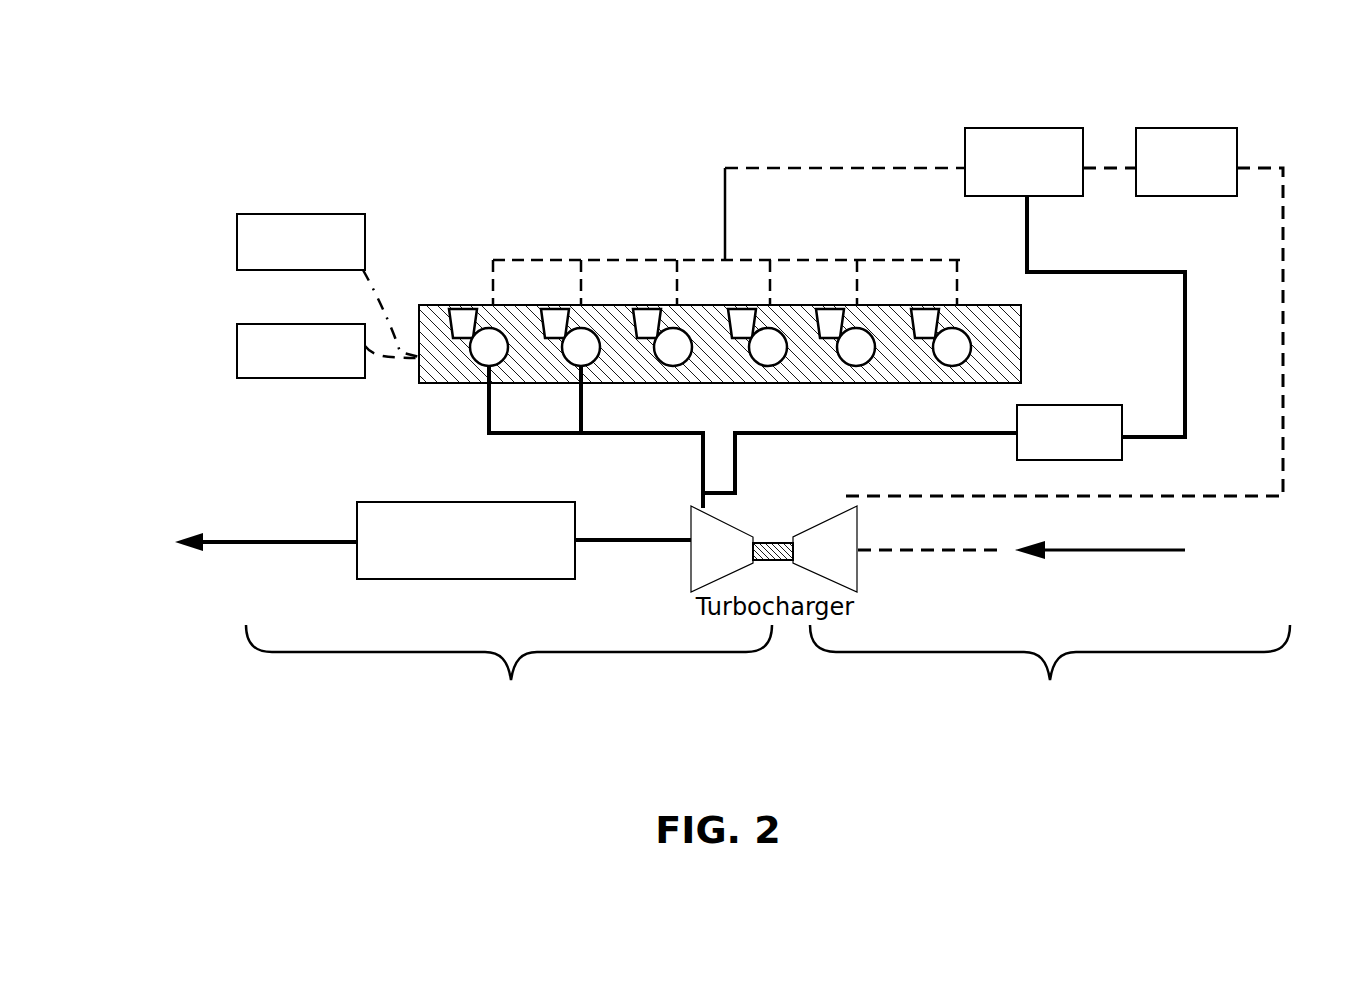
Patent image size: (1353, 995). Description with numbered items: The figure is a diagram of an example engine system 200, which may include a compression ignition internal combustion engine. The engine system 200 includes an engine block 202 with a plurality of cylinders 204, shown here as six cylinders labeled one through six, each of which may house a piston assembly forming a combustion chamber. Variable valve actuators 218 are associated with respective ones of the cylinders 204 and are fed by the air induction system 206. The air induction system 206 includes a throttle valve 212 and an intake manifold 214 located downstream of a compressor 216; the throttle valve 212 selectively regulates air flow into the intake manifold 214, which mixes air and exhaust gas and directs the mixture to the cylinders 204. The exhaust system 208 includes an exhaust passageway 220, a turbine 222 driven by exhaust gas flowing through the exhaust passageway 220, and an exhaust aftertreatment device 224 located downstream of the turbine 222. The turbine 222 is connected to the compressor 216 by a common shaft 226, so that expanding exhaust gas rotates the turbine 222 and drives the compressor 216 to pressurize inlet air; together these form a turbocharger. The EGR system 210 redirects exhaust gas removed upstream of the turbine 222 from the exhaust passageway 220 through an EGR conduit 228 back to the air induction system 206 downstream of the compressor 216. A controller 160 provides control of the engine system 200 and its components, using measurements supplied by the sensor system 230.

The engine system 200 is at (420, 130).
The engine block 202 is at (430, 312).
The cylinders 204 is at (645, 343).
The variable valve actuators 218 is at (820, 306).
The air induction system 206 is at (1050, 669).
The exhaust system 208 is at (509, 669).
The exhaust gas recirculation (EGR) system 210 is at (1085, 405).
The throttle valve 212 is at (1183, 128).
The intake manifold 214 is at (1037, 128).
The compressor 216 is at (857, 572).
The exhaust passageway 220 is at (700, 477).
The turbine 222 is at (690, 572).
The exhaust aftertreatment device 224 is at (400, 502).
The common shaft 226 is at (780, 540).
The EGR conduit 228 is at (988, 437).
The sensor system 230 is at (328, 285).
The controller 160 is at (328, 351).